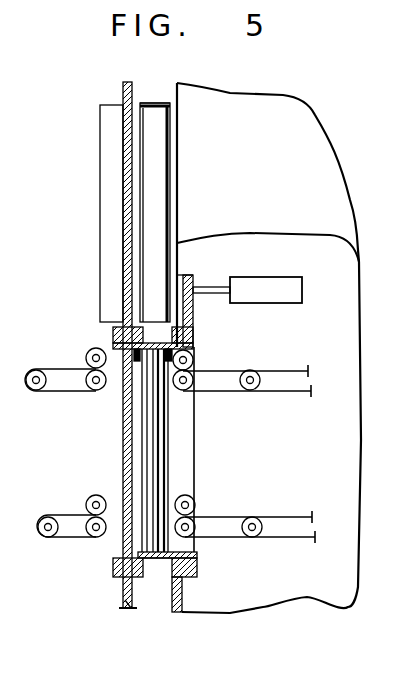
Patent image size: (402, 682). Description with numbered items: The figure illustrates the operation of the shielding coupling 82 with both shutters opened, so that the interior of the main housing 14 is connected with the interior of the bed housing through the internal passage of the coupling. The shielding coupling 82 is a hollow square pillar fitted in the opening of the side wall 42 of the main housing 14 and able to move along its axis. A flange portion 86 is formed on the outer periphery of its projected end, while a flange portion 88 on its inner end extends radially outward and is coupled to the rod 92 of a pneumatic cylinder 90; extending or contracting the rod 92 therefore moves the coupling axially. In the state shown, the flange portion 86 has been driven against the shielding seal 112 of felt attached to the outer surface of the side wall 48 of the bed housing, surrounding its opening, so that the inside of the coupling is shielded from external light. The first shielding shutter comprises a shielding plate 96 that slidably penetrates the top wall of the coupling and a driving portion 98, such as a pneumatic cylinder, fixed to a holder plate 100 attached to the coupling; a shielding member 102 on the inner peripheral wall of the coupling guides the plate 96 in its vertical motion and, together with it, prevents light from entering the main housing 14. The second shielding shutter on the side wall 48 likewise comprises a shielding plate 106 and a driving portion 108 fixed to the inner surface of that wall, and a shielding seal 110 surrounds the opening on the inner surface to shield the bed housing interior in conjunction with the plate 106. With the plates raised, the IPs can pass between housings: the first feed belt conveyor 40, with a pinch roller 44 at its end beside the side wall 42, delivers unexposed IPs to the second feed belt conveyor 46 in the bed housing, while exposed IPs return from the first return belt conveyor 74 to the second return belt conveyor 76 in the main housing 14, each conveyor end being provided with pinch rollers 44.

The main housing 14 is at (269, 348).
The first feed belt conveyor 40 is at (285, 370).
The side wall 42 is at (182, 600).
The pinch roller 44 is at (87, 354).
The second feed belt conveyor 46 is at (54, 395).
The side wall 48 is at (123, 597).
The first return belt conveyor 74 is at (55, 515).
The second return belt conveyor 76 is at (295, 516).
The shielding coupling 82 is at (153, 563).
The flange portion 86 is at (113, 345).
The flange portion 88 is at (197, 555).
The pneumatic cylinder 90 is at (264, 277).
The rod 92 is at (216, 287).
The shielding plate 96 is at (186, 310).
The driving portion 98 is at (166, 188).
The holder plate 100 is at (156, 101).
The shielding member 102 is at (166, 435).
The shielding plate 106 is at (118, 328).
The driving portion 108 is at (100, 185).
The shielding seal 110 is at (113, 562).
The shielding seal 112 is at (130, 609).